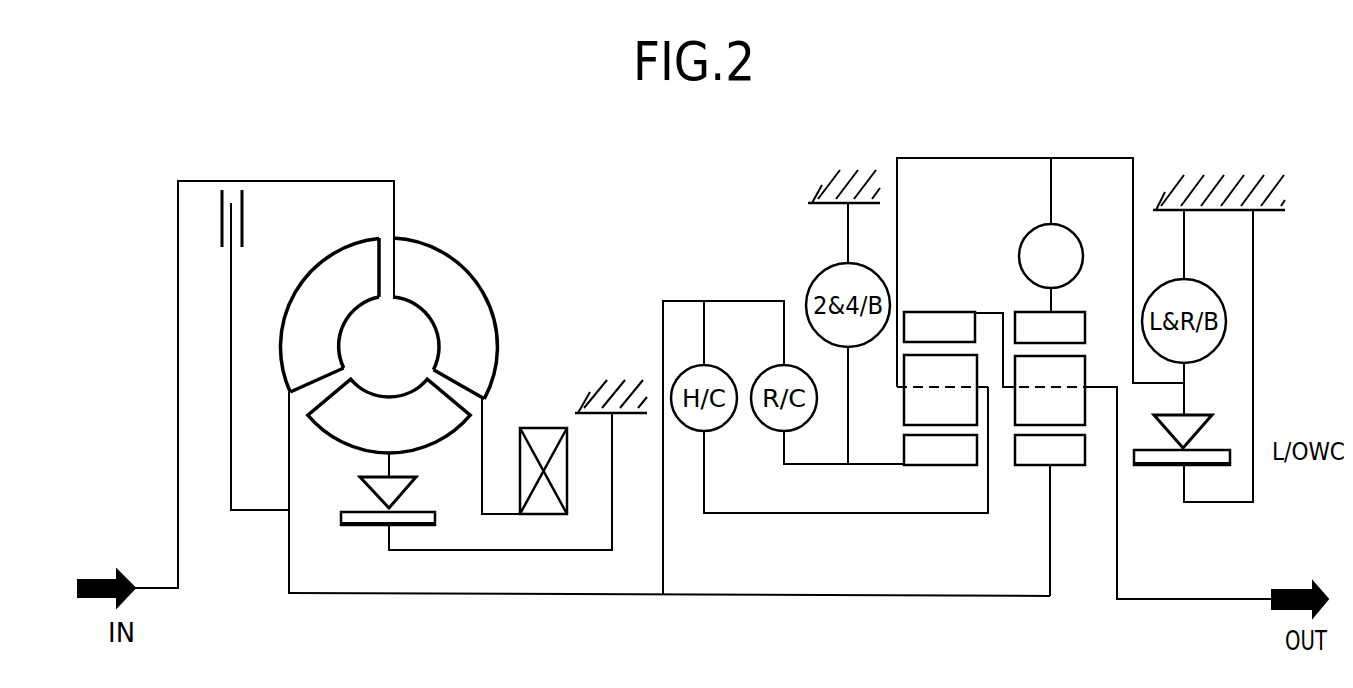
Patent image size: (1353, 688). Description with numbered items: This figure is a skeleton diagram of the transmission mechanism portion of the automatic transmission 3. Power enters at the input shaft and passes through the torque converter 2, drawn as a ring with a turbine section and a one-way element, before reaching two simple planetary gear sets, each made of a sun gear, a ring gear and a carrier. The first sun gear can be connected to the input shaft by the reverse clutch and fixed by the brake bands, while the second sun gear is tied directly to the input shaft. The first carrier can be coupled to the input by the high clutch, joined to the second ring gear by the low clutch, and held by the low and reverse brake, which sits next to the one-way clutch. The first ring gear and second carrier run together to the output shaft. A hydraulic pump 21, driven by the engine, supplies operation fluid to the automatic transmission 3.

The torque converter 2 is at (468, 240).
The hydraulic pump 21 is at (541, 427).
The automatic transmission 3 is at (1070, 152).